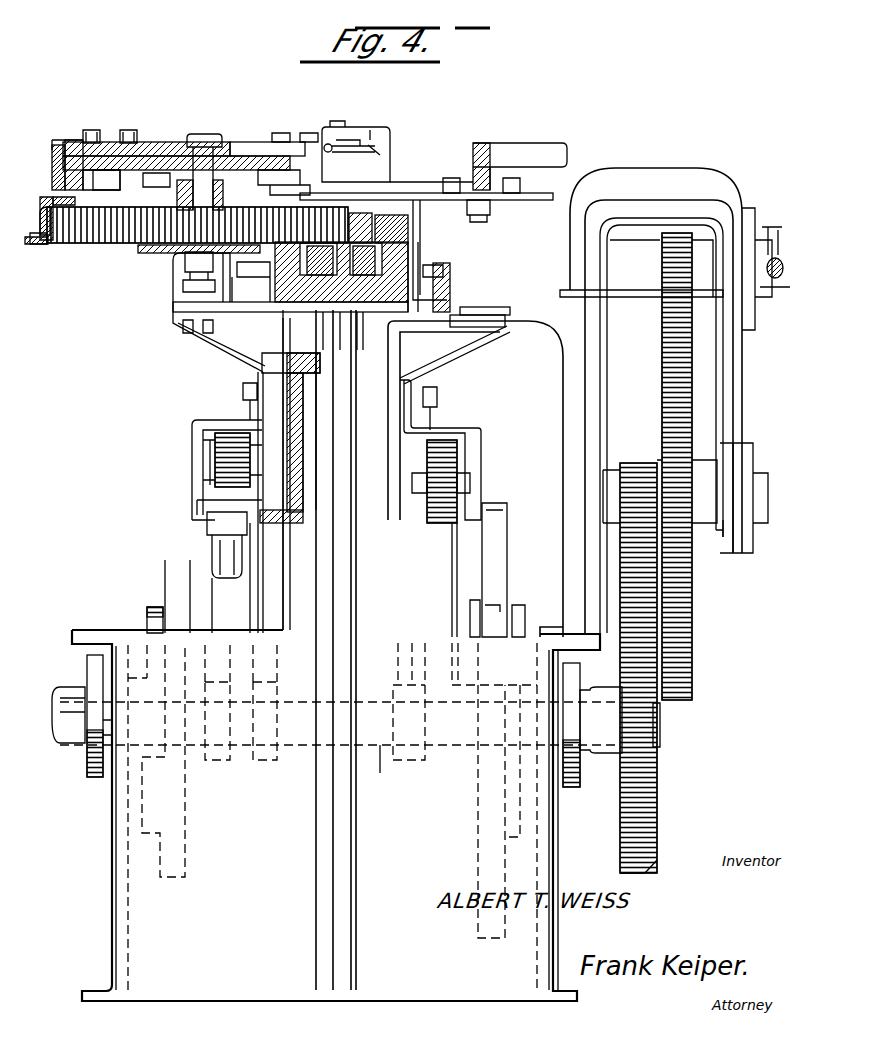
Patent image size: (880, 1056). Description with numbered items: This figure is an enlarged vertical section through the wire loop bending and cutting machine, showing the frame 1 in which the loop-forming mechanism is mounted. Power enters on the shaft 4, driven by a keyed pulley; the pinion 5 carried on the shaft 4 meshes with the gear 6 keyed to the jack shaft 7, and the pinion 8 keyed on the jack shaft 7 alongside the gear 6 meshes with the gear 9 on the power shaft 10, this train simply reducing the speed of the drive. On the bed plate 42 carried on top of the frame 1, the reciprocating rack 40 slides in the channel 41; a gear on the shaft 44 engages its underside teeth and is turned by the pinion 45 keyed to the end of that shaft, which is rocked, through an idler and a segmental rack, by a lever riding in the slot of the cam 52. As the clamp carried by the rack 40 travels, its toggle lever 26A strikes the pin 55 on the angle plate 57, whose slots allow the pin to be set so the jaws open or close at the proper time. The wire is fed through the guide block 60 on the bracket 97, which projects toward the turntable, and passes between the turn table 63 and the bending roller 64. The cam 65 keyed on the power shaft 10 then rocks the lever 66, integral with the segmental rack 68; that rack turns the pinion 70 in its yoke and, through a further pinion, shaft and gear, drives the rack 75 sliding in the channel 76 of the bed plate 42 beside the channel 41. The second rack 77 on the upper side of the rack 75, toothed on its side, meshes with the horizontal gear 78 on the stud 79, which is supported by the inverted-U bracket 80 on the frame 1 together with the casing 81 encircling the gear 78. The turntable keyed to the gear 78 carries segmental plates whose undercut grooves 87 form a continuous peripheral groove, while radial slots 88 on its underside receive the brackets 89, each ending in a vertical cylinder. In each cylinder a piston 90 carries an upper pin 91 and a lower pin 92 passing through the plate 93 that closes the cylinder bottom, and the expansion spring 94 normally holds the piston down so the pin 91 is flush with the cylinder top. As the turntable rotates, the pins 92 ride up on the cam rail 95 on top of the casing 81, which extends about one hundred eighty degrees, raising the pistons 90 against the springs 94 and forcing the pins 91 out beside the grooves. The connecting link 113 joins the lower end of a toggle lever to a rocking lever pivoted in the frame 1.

The frame 1 is at (115, 810).
The shaft 4 is at (772, 255).
The pinion 5 is at (676, 240).
The gear 6 is at (662, 366).
The jack shaft 7 is at (722, 522).
The pinion 8 is at (636, 463).
The gear 9 is at (653, 774).
The power shaft 10 is at (700, 727).
The toggle lever 26A is at (557, 146).
The reciprocating rack 40 is at (185, 282).
The channel 41 is at (197, 306).
The bed plate 42 is at (200, 327).
The shaft 44 is at (208, 440).
The pinion 45 is at (213, 463).
The cam 52 is at (162, 588).
The pin 55 is at (480, 170).
The angle plate 57 is at (527, 208).
The guide block 60 is at (335, 128).
The turn table 63 is at (230, 155).
The bending roller 64 is at (372, 140).
The cam 65 is at (498, 590).
The lever 66 is at (490, 615).
The segmental rack 68 is at (445, 563).
The pinion 70 is at (450, 474).
The rack 75 is at (378, 236).
The channel 76 is at (395, 260).
The second rack 77 is at (360, 214).
The gear 78 is at (80, 240).
The stud 79 is at (205, 165).
The bracket 80 is at (160, 254).
The casing 81 is at (46, 244).
The undercut groove 87 is at (87, 133).
The radial slots 88 is at (150, 143).
The brackets 89 is at (122, 134).
The piston 90 is at (66, 176).
The pin 91 is at (65, 140).
The pin 92 is at (58, 205).
The plate 93 is at (98, 244).
The expansion spring 94 is at (63, 156).
The cam rail 95 is at (53, 226).
The bracket 97 is at (540, 198).
The connecting link 113 is at (222, 560).